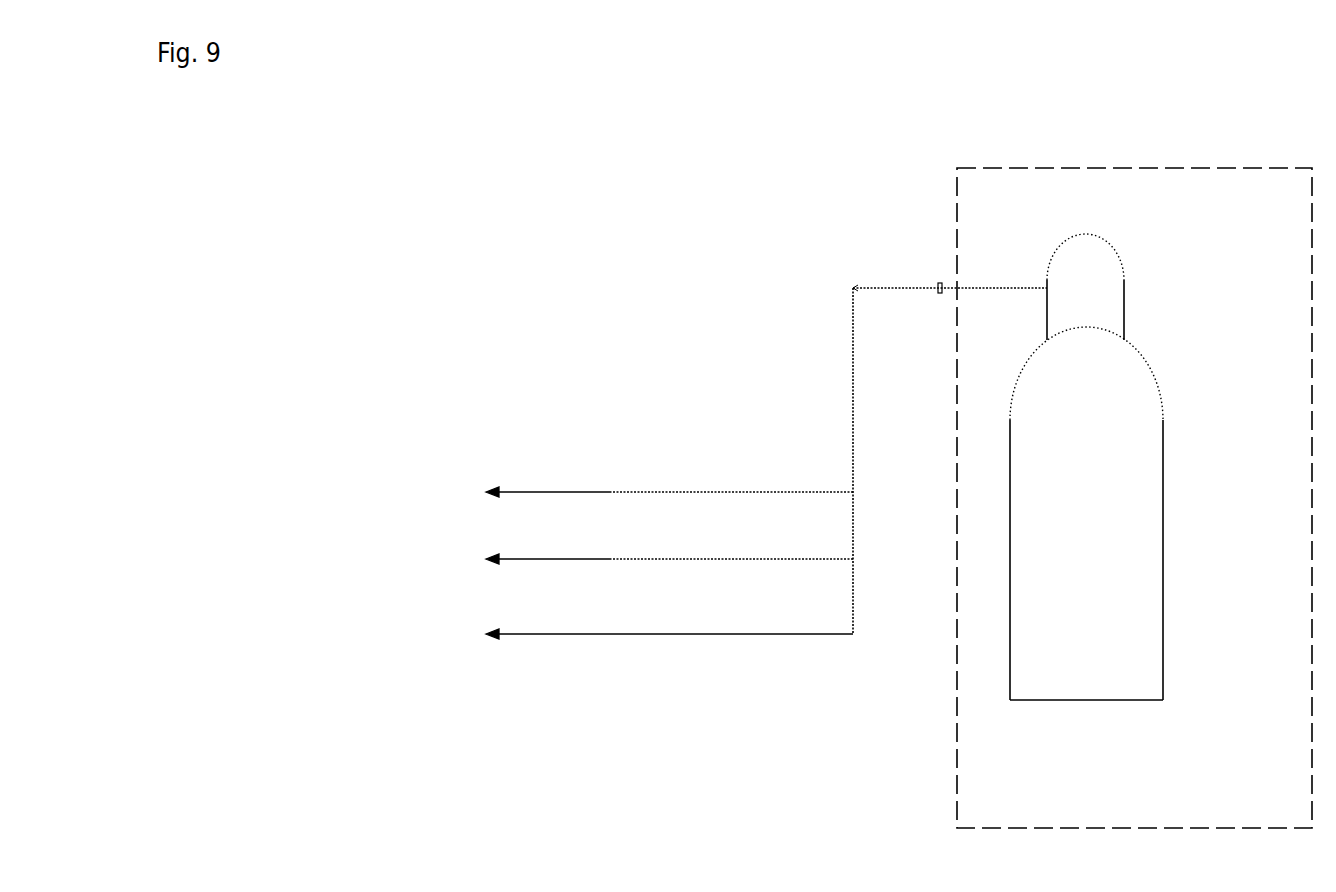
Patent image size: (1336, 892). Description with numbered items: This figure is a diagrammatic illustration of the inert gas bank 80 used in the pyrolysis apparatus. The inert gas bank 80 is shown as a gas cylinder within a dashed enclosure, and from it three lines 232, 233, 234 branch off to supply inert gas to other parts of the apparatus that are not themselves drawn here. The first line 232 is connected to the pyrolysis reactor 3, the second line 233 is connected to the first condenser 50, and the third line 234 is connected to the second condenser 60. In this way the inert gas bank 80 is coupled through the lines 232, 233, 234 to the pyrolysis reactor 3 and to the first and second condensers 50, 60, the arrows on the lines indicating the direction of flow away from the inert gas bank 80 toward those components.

The inert gas bank 80 is at (690, 288).
The line 232 is at (520, 493).
The line 233 is at (520, 562).
The line 234 is at (511, 636).
The pyrolysis reactor 3 is at (325, 493).
The first condenser 50 is at (325, 562).
The second condenser 60 is at (317, 636).